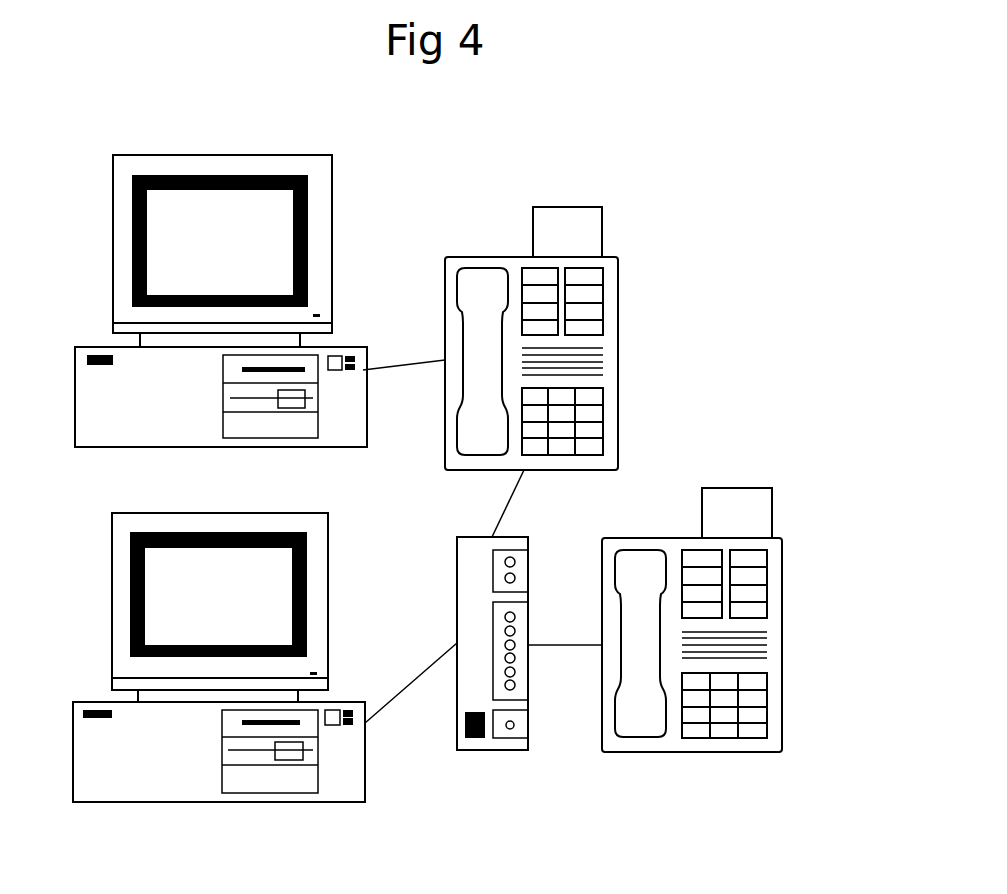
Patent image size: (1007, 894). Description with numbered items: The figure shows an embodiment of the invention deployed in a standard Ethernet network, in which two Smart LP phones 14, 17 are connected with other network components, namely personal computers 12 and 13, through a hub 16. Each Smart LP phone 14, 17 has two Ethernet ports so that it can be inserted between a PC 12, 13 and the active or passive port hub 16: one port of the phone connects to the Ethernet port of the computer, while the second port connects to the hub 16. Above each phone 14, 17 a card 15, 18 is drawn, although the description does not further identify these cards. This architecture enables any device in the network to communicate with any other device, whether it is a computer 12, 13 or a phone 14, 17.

The personal computer 12 is at (325, 230).
The personal computer 13 is at (340, 763).
The Smart LP phone 14 is at (610, 348).
The card of telephone 1 15 is at (593, 228).
The hub 16 is at (478, 740).
The Smart LP phone 17 is at (772, 622).
The card of telephone 2 18 is at (755, 503).